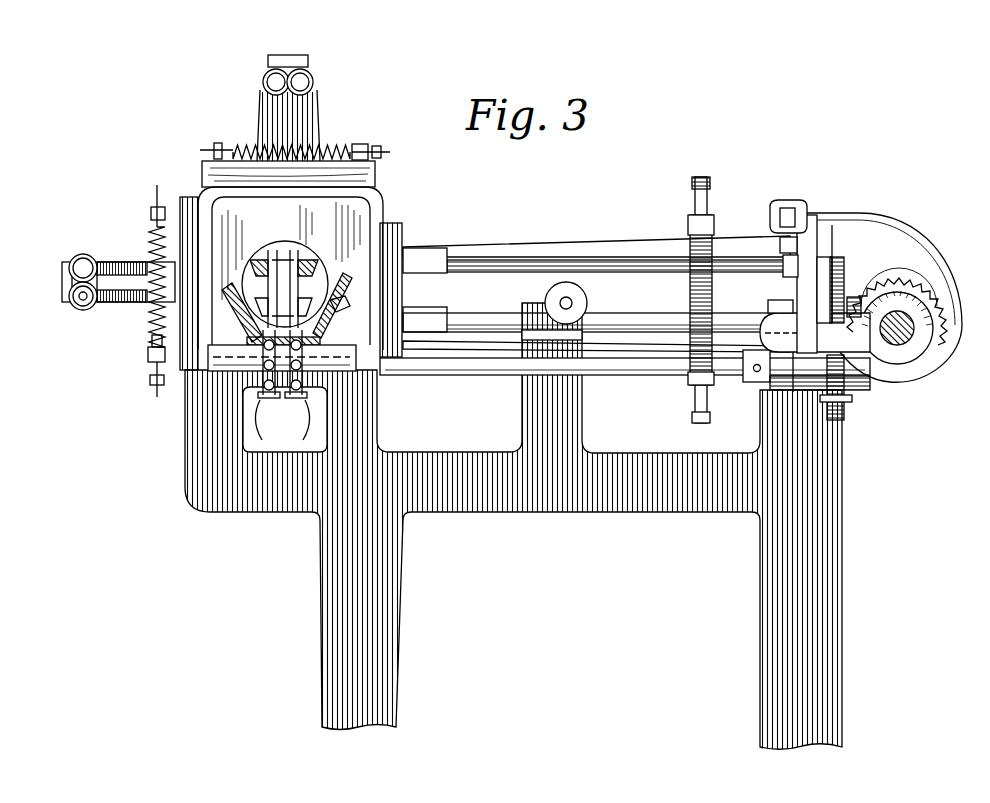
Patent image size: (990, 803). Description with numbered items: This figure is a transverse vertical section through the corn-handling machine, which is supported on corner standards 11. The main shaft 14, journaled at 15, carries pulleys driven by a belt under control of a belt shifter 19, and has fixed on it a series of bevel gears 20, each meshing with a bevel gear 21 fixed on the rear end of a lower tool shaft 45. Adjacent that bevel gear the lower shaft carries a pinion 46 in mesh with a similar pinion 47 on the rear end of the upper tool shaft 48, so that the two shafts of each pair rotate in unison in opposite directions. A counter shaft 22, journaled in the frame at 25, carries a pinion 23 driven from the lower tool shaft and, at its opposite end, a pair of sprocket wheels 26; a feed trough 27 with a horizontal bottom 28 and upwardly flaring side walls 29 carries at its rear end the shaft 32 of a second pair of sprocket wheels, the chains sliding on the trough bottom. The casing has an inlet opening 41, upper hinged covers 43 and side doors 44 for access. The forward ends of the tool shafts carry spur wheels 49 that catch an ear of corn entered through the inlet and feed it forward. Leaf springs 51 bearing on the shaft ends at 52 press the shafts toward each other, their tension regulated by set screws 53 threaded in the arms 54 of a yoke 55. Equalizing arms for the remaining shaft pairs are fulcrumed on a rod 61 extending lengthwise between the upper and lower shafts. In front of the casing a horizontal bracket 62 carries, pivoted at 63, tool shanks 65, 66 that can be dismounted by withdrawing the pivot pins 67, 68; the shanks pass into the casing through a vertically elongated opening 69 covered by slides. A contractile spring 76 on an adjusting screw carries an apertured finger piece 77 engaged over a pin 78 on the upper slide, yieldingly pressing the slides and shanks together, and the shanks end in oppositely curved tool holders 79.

The corner standards 11 is at (394, 620).
The main shaft 14 is at (900, 338).
The journal 15 is at (918, 315).
The belt shifter 19 is at (788, 215).
The bevel gear 20 is at (905, 283).
The bevel gear 21 is at (856, 298).
The counter shaft 22 is at (643, 375).
The pinion 23 is at (845, 393).
The journal 25 is at (793, 385).
The sprocket wheels 26 is at (298, 400).
The feed trough 27 is at (340, 290).
The horizontal bottom 28 is at (330, 348).
The side walls 29 is at (232, 305).
The shaft 32 is at (282, 424).
The inlet opening 41 is at (322, 262).
The hinged covers 43 is at (323, 187).
The side doors 44 is at (178, 188).
The lower tool shaft 45 is at (492, 318).
The pinion 46 is at (830, 307).
The pinion 47 is at (848, 270).
The upper tool shaft 48 is at (736, 270).
The spur wheels 49 is at (337, 312).
The leaf springs 51 is at (597, 246).
The bearing point 52 is at (420, 250).
The set screws 53 is at (706, 178).
The arms 54 is at (712, 222).
The yoke 55 is at (690, 292).
The rod 61 is at (572, 302).
The bracket 62 is at (113, 260).
The pivot point 63 is at (83, 254).
The upper tool shank 65 is at (130, 272).
The lower tool shank 66 is at (132, 300).
The pivot pin 67 is at (62, 270).
The pivot pin 68 is at (70, 304).
The opening 69 is at (80, 308).
The contractile spring 76 is at (150, 340).
The finger piece 77 is at (155, 195).
The pin 78 is at (151, 212).
The tool holder 79 is at (155, 392).